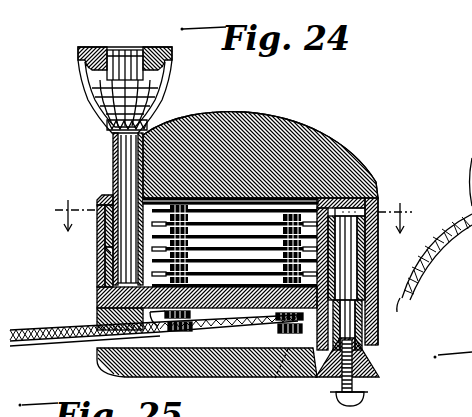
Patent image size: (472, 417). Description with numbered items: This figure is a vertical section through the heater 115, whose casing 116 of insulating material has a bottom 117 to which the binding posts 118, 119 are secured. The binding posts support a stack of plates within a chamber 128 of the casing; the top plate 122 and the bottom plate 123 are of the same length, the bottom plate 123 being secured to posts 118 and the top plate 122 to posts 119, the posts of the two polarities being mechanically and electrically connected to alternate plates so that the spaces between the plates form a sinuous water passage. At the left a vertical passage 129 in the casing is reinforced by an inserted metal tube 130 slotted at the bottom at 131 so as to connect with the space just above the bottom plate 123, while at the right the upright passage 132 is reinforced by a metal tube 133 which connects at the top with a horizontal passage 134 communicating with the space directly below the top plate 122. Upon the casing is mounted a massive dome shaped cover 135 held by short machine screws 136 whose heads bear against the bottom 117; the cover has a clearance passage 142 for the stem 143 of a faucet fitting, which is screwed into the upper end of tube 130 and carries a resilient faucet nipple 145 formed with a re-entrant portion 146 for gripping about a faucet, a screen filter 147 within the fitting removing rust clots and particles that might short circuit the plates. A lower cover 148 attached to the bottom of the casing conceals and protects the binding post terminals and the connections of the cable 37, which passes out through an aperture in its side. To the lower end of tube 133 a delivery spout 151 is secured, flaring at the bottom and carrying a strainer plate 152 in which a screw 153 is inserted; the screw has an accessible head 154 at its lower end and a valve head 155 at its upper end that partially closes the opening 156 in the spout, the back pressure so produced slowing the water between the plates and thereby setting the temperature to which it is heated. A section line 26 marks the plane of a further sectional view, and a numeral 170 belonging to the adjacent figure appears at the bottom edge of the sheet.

The section line 26 is at (234, 216).
The cable 37 is at (28, 345).
The heater 115 is at (354, 148).
The casing 116 is at (97, 286).
The bottom 117 is at (305, 318).
The binding posts 118 is at (190, 328).
The binding posts 119 is at (285, 374).
The top plate 122 is at (234, 227).
The bottom plate 123 is at (98, 318).
The chamber 128 is at (230, 185).
The vertical passage 129 is at (104, 267).
The metal tube 130 is at (107, 247).
The slot 131 is at (100, 297).
The upright passage 132 is at (348, 245).
The metal tube 133 is at (378, 300).
The horizontal passage 134 is at (377, 210).
The dome shaped cover 135 is at (326, 122).
The machine screws 136 is at (458, 160).
The clearance passage 142 is at (110, 195).
The stem 143 is at (113, 152).
The resilient faucet nipple 145 is at (112, 49).
The re-entrant portion 146 is at (144, 50).
The screen filter 147 is at (149, 105).
The lower cover 148 is at (106, 356).
The delivery spout 151 is at (373, 367).
The strainer plate 152 is at (343, 383).
The screw 153 is at (356, 388).
The head 154 is at (349, 402).
The valve head 155 is at (379, 352).
The opening 156 is at (361, 333).
The element of adjacent figure 170 is at (285, 410).